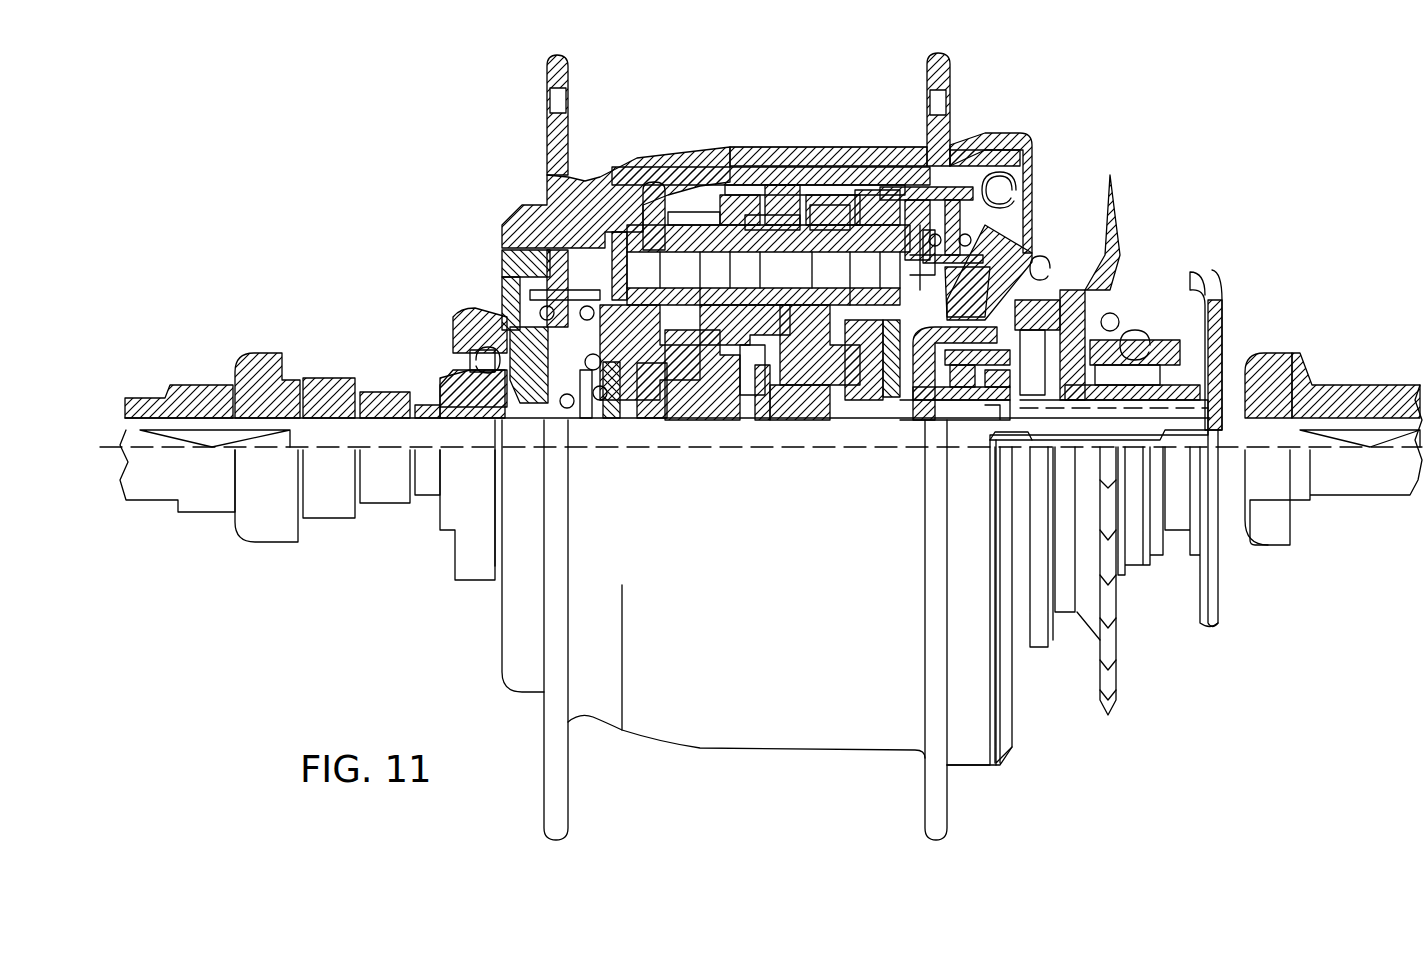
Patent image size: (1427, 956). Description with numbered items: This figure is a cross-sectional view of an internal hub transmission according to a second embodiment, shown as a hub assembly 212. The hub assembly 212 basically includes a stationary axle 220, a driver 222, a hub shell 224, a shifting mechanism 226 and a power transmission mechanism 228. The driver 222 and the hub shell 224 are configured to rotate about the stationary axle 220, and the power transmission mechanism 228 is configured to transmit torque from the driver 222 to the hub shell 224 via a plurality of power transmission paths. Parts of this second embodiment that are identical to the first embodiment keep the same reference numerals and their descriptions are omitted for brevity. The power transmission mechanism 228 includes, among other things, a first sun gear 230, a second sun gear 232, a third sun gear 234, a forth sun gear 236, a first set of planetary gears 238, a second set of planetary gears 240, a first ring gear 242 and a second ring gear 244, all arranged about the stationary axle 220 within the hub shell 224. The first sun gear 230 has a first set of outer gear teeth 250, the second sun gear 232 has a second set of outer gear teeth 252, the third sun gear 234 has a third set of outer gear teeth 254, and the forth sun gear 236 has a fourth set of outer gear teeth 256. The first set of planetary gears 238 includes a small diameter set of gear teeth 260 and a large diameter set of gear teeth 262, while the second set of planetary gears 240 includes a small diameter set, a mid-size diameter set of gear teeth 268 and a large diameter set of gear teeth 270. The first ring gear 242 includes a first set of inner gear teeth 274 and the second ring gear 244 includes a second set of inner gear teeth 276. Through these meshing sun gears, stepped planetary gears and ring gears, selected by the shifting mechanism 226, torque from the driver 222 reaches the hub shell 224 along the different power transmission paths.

The hub assembly 212 is at (693, 52).
The stationary axle 220 is at (334, 430).
The driver 222 is at (1068, 300).
The hub shell 224 is at (785, 165).
The shifting mechanism 226 is at (670, 280).
The power transmission mechanism 228 is at (750, 428).
The first sun gear 230 is at (878, 372).
The second sun gear 232 is at (805, 360).
The third sun gear 234 is at (682, 358).
The forth sun gear 236 is at (653, 365).
The first set of planetary gears 238 is at (868, 207).
The second set of planetary gears 240 is at (693, 196).
The first ring gear 242 is at (896, 200).
The second ring gear 244 is at (748, 215).
The first set of outer gear teeth 250 is at (892, 420).
The second set of outer gear teeth 252 is at (738, 315).
The third set of outer gear teeth 254 is at (690, 372).
The fourth set of outer gear teeth 256 is at (620, 413).
The small diameter set of gear teeth 260 is at (862, 232).
The large diameter set of gear teeth 262 is at (822, 205).
The mid-size diameter set of gear teeth 268 is at (676, 212).
The large diameter set of gear teeth 270 is at (652, 198).
The first set of inner gear teeth 274 is at (845, 225).
The second set of inner gear teeth 276 is at (748, 228).